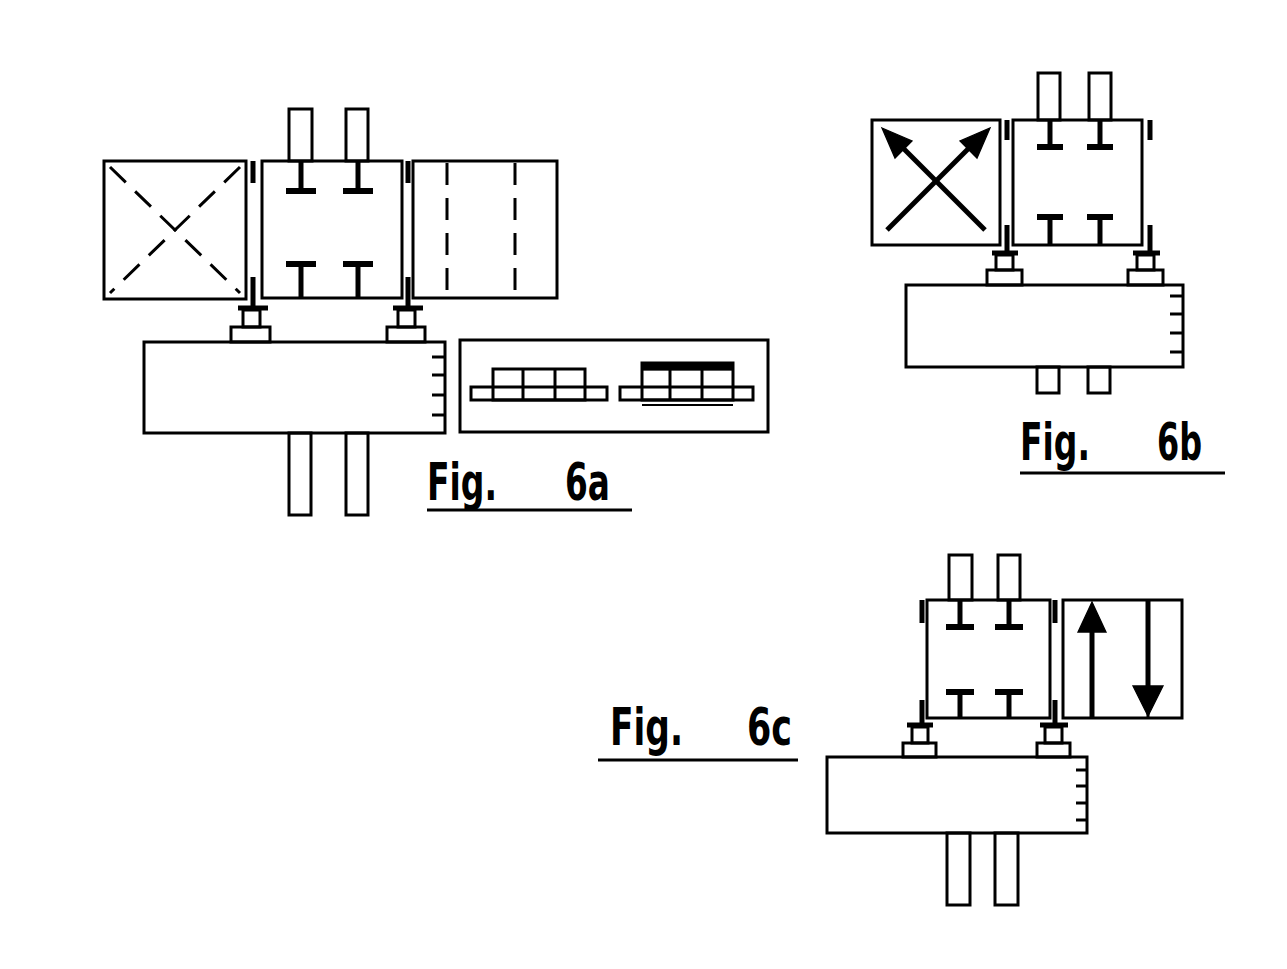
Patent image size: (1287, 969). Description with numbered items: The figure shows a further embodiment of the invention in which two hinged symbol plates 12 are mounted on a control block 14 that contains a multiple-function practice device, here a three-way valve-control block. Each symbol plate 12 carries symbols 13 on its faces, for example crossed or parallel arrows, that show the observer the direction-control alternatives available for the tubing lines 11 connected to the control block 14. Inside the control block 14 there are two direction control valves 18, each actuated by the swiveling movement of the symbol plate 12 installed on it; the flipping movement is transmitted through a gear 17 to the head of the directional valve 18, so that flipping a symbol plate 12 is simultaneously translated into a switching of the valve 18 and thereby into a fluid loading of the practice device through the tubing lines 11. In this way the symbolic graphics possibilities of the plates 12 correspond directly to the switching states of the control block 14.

In FIG. 6A, the tubing lines 11 is at (360, 109).
In FIG. 6B, the tubing lines 11 is at (1111, 97).
In FIG. 6C, the tubing lines 11 is at (1012, 555).
In FIG. 6A, the symbol plate 12 is at (140, 161).
In FIG. 6B, the symbol plate 12 is at (903, 120).
In FIG. 6C, the symbol plate 12 is at (942, 645).
In FIG. 6B, the symbols 13 is at (870, 188).
In FIG. 6C, the symbols 13 is at (1150, 637).
In FIG. 6A, the control block 14 is at (172, 435).
In FIG. 6B, the control block 14 is at (938, 337).
In FIG. 6C, the control block 14 is at (866, 806).
In FIG. 6A, the gear 17 is at (240, 308).
In FIG. 6A, the directional valve 18 is at (233, 338).